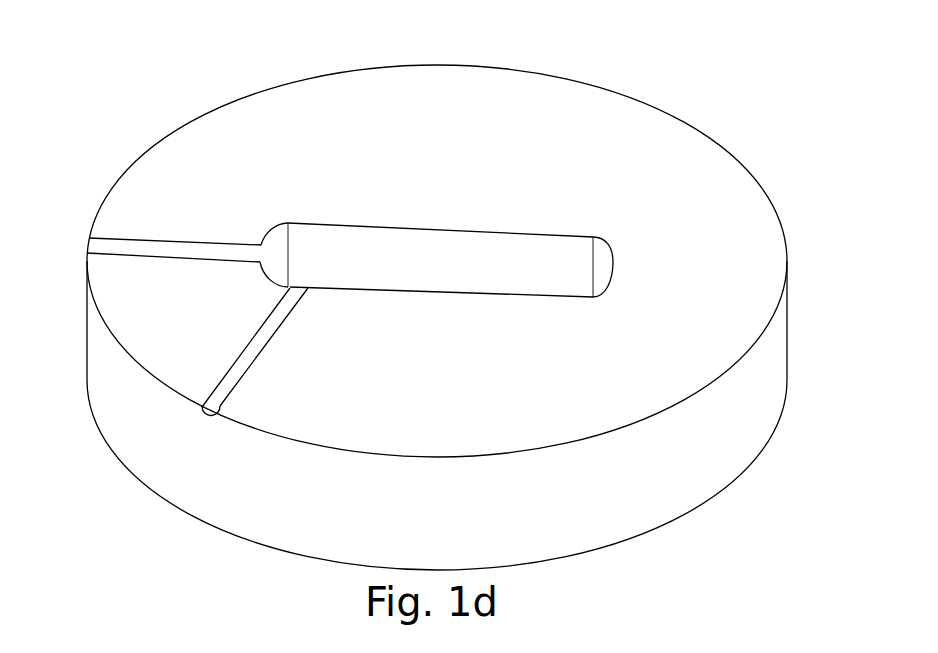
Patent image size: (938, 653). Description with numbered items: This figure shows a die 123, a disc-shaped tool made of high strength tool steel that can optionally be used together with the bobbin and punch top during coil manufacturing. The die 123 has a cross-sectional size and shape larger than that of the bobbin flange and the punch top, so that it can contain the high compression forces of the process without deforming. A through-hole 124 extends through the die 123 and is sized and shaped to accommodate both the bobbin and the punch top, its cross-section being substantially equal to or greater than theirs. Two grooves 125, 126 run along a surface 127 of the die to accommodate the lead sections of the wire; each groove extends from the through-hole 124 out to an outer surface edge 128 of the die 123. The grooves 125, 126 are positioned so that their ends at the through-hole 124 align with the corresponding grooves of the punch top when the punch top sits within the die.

The die 123 is at (411, 285).
The through-hole 124 is at (448, 245).
The groove 125 is at (215, 383).
The groove 126 is at (143, 247).
The surface 127 is at (183, 147).
The outer surface edge 128 is at (710, 465).